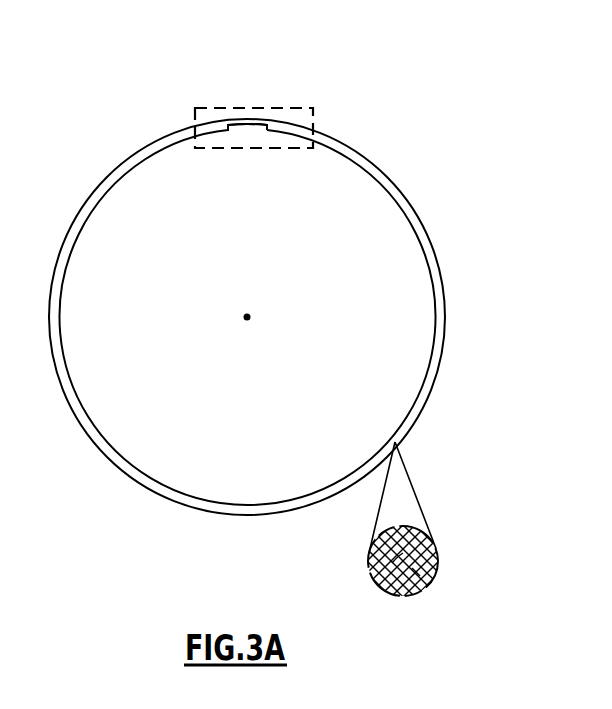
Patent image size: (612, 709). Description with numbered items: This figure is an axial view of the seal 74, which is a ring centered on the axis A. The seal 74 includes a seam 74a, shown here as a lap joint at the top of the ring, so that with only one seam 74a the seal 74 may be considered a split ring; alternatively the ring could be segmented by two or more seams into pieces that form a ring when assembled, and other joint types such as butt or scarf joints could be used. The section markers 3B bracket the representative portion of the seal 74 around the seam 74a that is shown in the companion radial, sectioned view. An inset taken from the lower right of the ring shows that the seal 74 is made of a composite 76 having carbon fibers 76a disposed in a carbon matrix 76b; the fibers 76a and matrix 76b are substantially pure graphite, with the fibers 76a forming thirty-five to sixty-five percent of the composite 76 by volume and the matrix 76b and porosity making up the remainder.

The seal 74 is at (424, 220).
The seam 74a is at (247, 125).
The section view indicator 3B is at (197, 73).
The axis A is at (250, 316).
The composite 76 is at (441, 547).
The carbon fibers 76a is at (398, 556).
The carbon matrix 76b is at (418, 574).